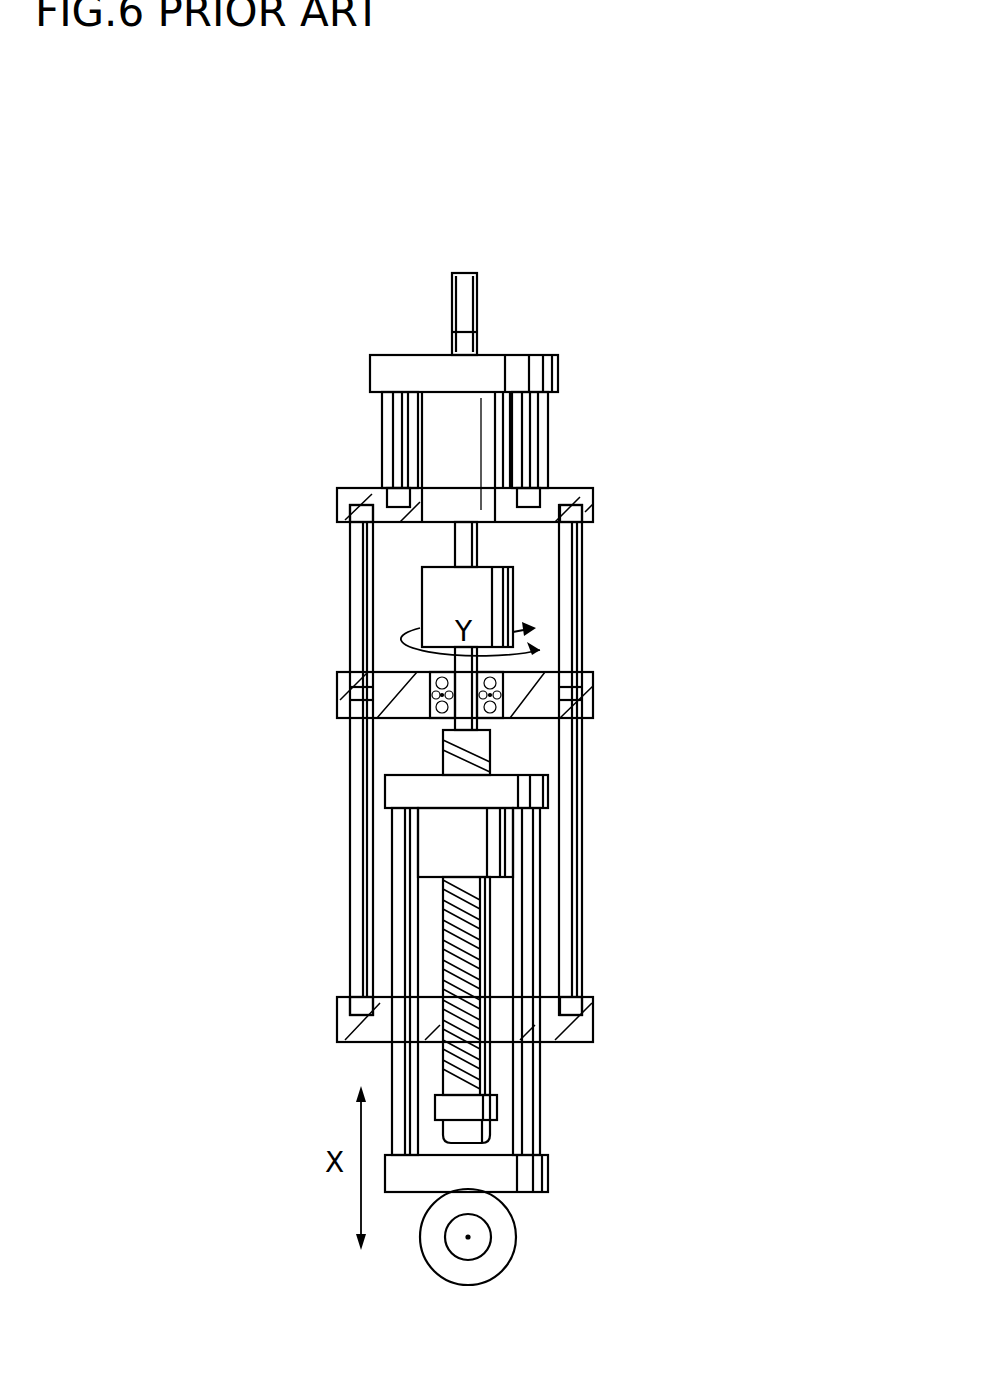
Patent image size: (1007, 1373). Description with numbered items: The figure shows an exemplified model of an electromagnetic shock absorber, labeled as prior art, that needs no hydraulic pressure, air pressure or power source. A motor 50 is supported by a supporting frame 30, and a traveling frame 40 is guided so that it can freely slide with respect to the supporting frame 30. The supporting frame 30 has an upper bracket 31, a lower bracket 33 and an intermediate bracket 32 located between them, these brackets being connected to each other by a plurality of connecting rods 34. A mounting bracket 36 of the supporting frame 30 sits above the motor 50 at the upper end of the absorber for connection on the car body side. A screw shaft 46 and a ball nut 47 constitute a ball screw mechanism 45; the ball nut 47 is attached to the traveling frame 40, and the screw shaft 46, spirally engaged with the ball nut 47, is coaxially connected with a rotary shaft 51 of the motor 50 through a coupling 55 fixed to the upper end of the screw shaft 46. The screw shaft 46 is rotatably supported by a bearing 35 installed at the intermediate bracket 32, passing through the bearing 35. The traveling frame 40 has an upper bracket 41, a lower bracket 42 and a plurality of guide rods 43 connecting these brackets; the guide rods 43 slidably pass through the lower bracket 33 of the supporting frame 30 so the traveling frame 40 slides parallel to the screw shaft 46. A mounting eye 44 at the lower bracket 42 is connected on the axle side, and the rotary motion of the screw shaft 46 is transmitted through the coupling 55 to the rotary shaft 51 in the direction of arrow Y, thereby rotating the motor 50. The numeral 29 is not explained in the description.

The motor 29 is at (473, 423).
The supporting frame 30 is at (587, 740).
The upper bracket 31 is at (590, 510).
The intermediate bracket 32 is at (478, 705).
The lower bracket 33 is at (593, 1020).
The connecting rods 34 is at (350, 612).
The bearing 35 is at (430, 706).
The mounting bracket 36 is at (558, 370).
The traveling frame 40 is at (391, 924).
The upper bracket 41 is at (392, 795).
The lower bracket 42 is at (530, 1192).
The guide rods 43 is at (392, 1060).
The mounting eye 44 is at (510, 1255).
The ball screw mechanism 45 is at (477, 861).
The screw shaft 46 is at (487, 915).
The ball nut 47 is at (430, 850).
The motor 50 is at (425, 437).
The rotary shaft 51 is at (455, 543).
The coupling 55 is at (513, 585).